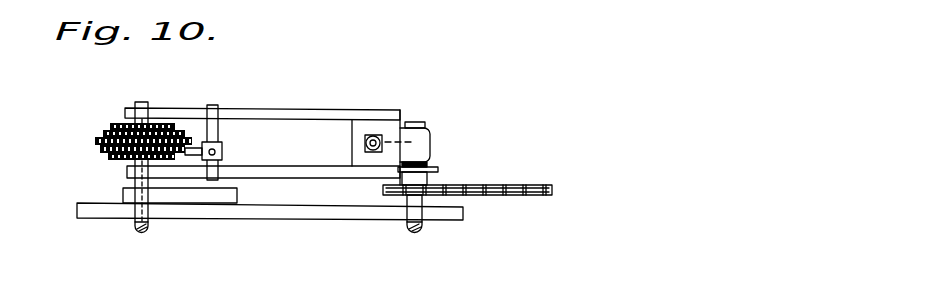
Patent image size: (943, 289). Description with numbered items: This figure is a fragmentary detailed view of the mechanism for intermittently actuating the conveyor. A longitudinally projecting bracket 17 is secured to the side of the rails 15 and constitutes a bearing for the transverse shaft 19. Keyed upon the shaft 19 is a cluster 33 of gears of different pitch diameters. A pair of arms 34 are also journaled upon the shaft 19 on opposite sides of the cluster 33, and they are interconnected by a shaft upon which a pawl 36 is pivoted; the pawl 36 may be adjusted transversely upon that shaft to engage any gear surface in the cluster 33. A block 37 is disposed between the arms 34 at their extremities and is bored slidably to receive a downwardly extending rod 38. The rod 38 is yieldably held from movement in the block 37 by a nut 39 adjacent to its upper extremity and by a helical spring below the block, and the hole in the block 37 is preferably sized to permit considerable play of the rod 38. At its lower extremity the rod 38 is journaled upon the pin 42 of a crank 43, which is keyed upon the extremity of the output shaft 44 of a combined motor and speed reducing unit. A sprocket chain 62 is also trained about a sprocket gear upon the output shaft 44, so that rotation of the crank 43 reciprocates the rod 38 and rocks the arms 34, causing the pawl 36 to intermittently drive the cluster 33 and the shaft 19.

The rails 15 is at (297, 215).
The bracket 17 is at (198, 198).
The transverse shaft 19 is at (145, 233).
The cluster of gears 33 is at (92, 142).
The arms 34 is at (267, 111).
The pawl 36 is at (215, 104).
The block 37 is at (358, 130).
The rod 38 is at (413, 143).
The nut 39 is at (376, 137).
The pin 42 is at (427, 122).
The crank 43 is at (437, 166).
The output shaft 44 is at (409, 225).
The sprocket chain 62 is at (552, 190).